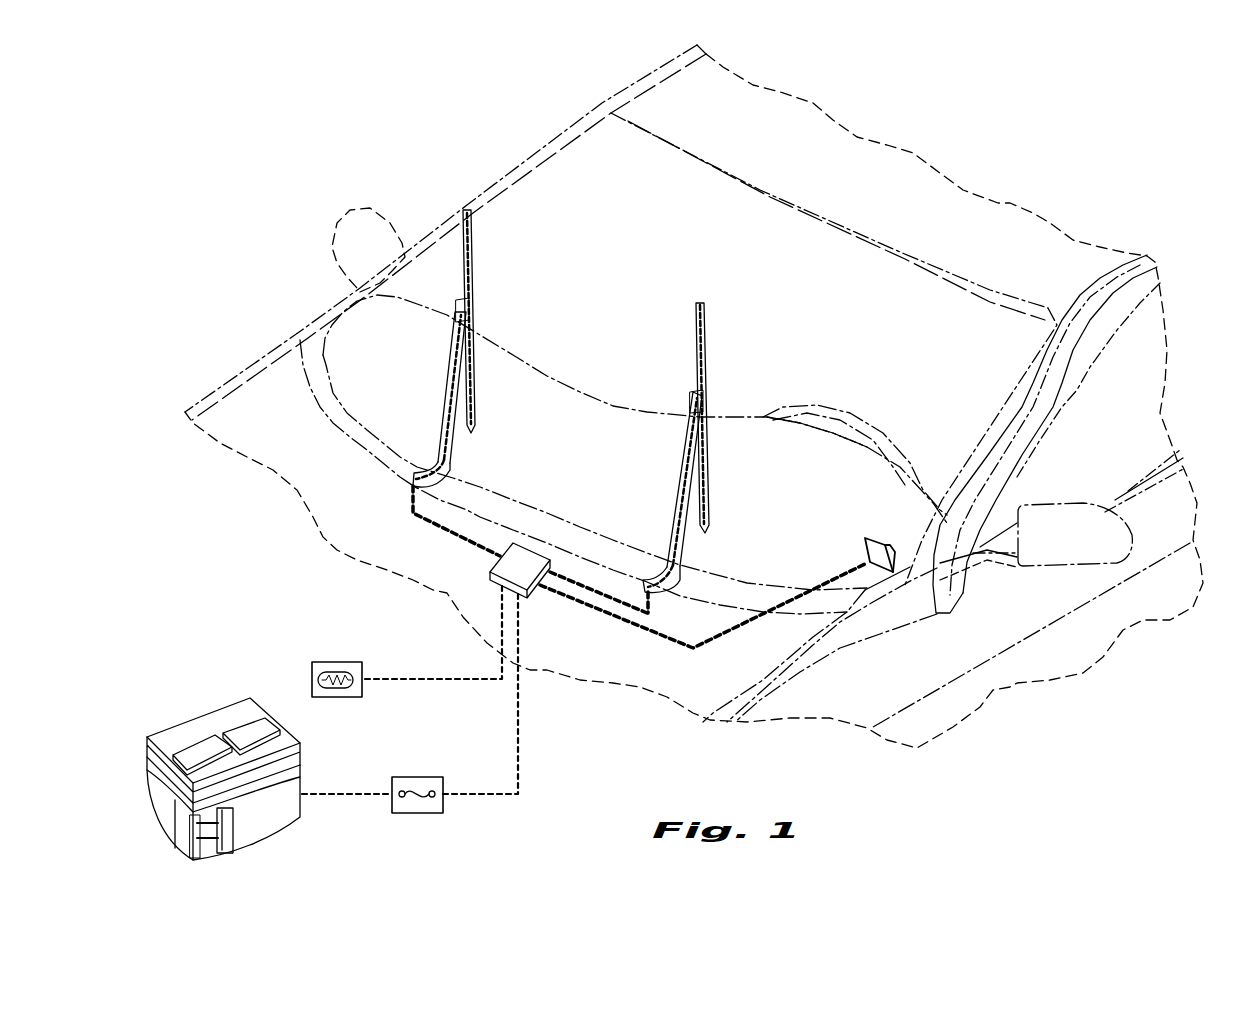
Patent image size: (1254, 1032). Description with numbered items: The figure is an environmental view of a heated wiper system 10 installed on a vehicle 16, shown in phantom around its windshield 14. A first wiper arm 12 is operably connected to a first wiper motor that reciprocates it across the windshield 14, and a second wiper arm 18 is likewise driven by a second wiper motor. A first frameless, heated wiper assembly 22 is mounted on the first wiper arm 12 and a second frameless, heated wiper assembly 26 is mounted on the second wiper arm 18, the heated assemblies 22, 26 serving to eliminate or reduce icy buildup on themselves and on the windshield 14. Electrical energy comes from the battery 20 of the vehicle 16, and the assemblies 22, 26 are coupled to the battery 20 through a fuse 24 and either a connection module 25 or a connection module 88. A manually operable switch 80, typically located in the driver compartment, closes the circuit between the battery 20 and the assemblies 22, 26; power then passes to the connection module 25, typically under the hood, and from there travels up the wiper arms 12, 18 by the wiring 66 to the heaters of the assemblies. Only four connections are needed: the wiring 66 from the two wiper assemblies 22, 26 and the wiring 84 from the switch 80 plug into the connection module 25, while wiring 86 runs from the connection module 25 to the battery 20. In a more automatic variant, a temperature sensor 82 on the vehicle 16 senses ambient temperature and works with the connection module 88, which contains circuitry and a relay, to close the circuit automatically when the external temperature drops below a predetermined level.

The heated wiper system 10 is at (647, 200).
The first wiper arm 12 is at (447, 405).
The windshield 14 is at (763, 418).
The vehicle 16 is at (1157, 265).
The second wiper arm 18 is at (683, 483).
The battery 20 is at (206, 720).
The first frameless, heated wiper assembly 22 is at (476, 267).
The fuse 24 is at (418, 813).
The connection module 25 is at (554, 540).
The second frameless, heated wiper assembly 26 is at (710, 358).
The wiring 66 is at (407, 507).
The switch 80 is at (895, 552).
The temperature sensor 82 is at (337, 662).
The wiring 84 is at (590, 605).
The wiring 86 is at (519, 723).
The connection module 88 is at (530, 548).